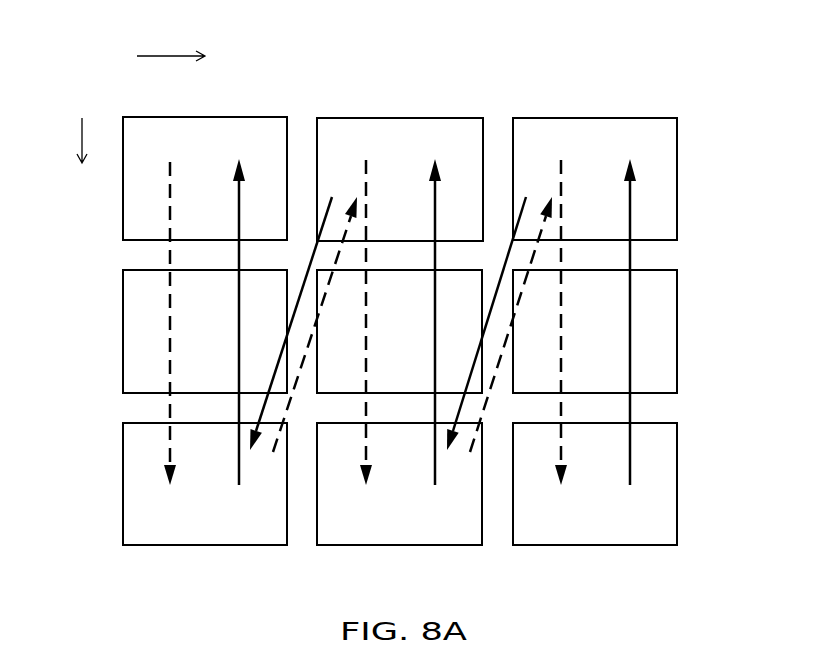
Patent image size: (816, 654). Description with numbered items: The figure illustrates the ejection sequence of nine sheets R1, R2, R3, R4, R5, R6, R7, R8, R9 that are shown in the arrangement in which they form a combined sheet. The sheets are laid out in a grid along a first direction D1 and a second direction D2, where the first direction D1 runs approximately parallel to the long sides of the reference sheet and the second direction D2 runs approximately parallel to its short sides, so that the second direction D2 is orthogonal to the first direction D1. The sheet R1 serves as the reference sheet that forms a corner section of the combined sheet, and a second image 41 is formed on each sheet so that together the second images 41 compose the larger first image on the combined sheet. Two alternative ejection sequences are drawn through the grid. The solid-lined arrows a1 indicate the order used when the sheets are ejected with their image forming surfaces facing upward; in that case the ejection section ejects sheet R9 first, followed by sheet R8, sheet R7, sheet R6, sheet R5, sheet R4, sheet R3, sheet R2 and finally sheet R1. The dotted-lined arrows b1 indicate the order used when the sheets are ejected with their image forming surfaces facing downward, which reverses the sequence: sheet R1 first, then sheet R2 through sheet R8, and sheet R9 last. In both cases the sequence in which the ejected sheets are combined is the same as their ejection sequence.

The second image 41 is at (396, 328).
The sheet R1 is at (247, 117).
The sheet R2 is at (122, 335).
The sheet R3 is at (122, 503).
The sheet R4 is at (453, 118).
The sheet R5 is at (377, 270).
The sheet R6 is at (447, 545).
The sheet R7 is at (678, 138).
The sheet R8 is at (680, 355).
The sheet R9 is at (678, 517).
The solid-lined arrows a1 is at (240, 225).
The dotted-lined arrows b1 is at (168, 203).
The first direction D1 is at (163, 53).
The second direction D2 is at (78, 135).